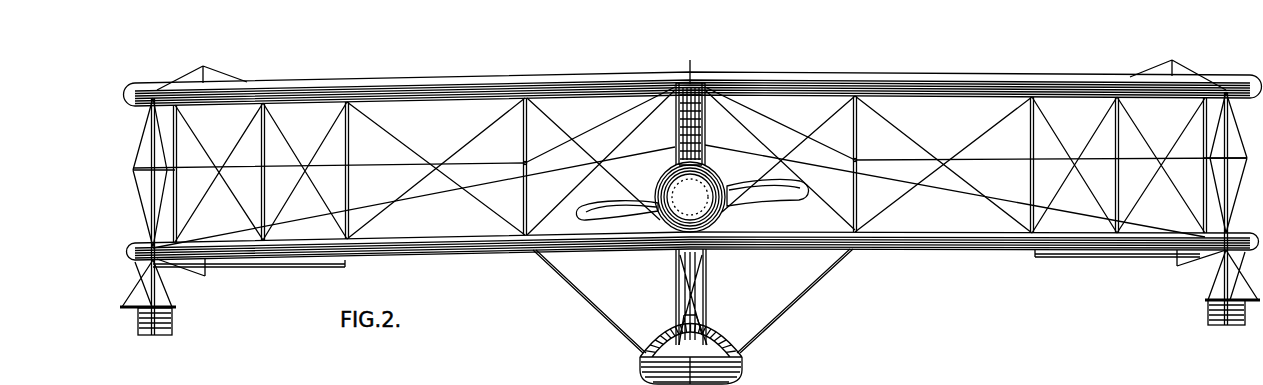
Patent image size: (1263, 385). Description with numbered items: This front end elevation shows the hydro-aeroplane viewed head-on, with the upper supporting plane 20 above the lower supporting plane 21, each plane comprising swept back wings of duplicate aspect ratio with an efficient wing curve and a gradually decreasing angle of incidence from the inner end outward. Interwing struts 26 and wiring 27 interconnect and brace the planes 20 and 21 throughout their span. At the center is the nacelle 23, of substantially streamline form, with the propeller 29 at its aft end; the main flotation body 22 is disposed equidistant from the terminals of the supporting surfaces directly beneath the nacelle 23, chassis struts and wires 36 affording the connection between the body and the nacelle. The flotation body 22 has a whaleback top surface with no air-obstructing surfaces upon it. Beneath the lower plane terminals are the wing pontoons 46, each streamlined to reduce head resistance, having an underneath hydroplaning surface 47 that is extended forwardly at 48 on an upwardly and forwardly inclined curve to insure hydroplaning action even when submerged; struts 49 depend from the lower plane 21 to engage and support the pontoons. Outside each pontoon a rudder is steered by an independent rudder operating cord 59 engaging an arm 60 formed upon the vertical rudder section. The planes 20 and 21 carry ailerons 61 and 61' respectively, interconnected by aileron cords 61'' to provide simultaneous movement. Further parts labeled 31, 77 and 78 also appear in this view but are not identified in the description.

The upper supporting plane 20 is at (786, 76).
The lower supporting plane 21 is at (897, 256).
The main flotation body 22 is at (751, 360).
The nacelle 23 is at (663, 195).
The interwing struts 26 is at (706, 141).
The wiring 27 is at (767, 129).
The propeller 29 is at (780, 200).
The outer end frame 31 is at (155, 159).
The wires 36 is at (693, 301).
The wing pontoons 46 is at (168, 307).
The underneath hydroplaning surface 47 is at (168, 333).
The forward extension of hydroplaning surface 48 is at (172, 321).
The struts 49 is at (157, 280).
The rudder operating cords 59 is at (888, 184).
The arm 60 is at (128, 307).
The ailerons of upper plane 61 is at (690, 213).
The ailerons of lower plane 61' is at (676, 249).
The aileron cords 61'' is at (690, 166).
The lower mast 77 is at (680, 275).
The upper mast 78 is at (678, 134).